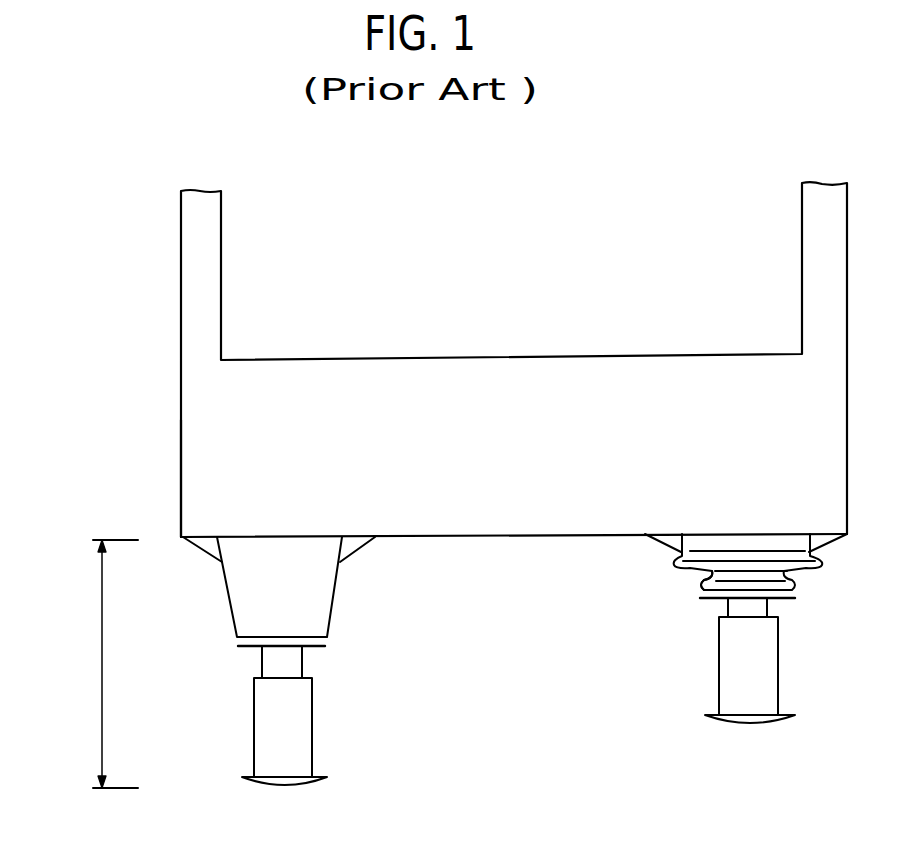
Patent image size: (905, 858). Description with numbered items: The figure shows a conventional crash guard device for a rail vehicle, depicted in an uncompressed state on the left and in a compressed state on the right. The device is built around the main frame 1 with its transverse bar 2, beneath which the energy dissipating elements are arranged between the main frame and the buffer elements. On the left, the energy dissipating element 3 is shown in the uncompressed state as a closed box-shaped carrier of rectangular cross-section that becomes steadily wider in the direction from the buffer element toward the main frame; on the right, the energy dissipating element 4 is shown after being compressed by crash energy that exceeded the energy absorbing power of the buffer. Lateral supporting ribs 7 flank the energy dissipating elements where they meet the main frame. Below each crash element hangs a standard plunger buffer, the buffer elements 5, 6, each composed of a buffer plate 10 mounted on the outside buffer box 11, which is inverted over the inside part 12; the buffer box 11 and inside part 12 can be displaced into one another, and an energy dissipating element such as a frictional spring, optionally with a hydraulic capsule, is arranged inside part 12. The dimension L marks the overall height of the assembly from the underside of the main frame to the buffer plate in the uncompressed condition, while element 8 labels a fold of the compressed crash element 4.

The main frame 1 is at (181, 263).
The transverse bar 2 is at (200, 440).
The energy dissipating element in the uncompressed state 3 is at (248, 602).
The energy dissipating element in the compressed state 4 is at (800, 578).
The buffer element 5 is at (275, 718).
The buffer element 6 is at (762, 668).
The lateral supporting ribs 7 is at (200, 550).
The bellows fold 8 is at (705, 568).
The buffer plate 10 is at (292, 782).
The buffer box 11 is at (312, 720).
The inside part of buffer 12 is at (290, 662).
The height dimension L is at (101, 660).